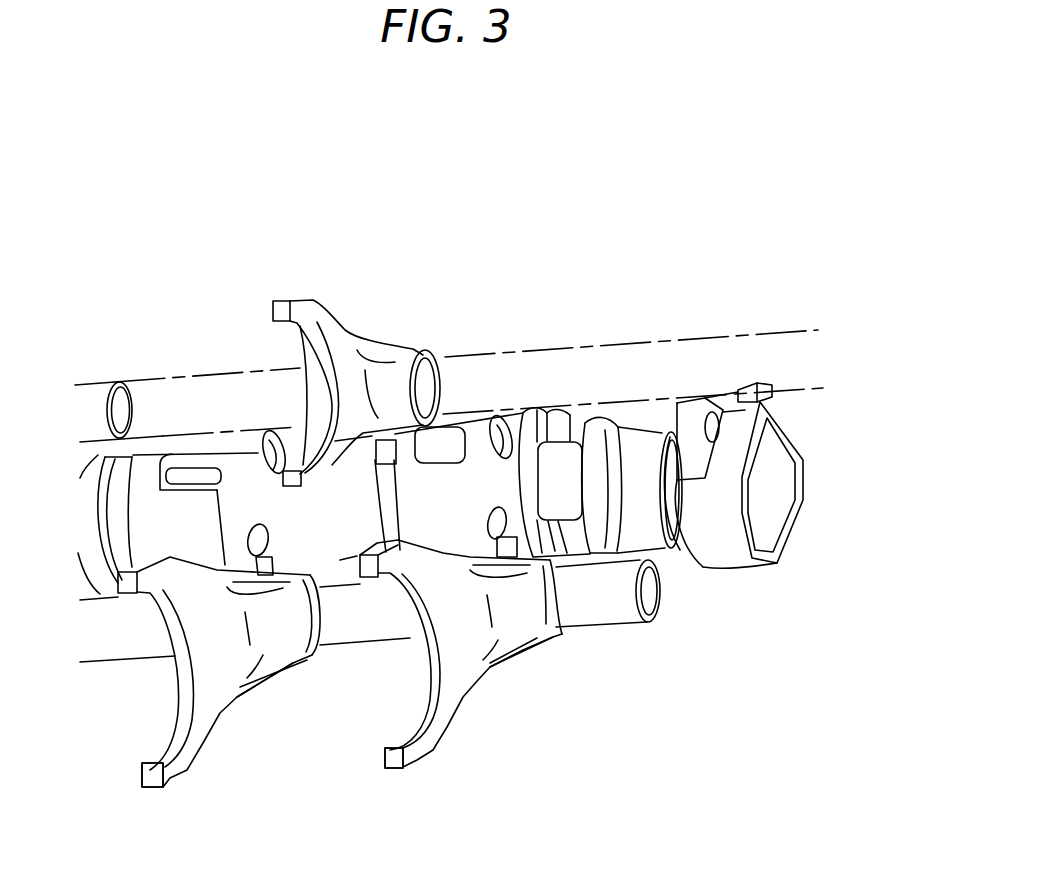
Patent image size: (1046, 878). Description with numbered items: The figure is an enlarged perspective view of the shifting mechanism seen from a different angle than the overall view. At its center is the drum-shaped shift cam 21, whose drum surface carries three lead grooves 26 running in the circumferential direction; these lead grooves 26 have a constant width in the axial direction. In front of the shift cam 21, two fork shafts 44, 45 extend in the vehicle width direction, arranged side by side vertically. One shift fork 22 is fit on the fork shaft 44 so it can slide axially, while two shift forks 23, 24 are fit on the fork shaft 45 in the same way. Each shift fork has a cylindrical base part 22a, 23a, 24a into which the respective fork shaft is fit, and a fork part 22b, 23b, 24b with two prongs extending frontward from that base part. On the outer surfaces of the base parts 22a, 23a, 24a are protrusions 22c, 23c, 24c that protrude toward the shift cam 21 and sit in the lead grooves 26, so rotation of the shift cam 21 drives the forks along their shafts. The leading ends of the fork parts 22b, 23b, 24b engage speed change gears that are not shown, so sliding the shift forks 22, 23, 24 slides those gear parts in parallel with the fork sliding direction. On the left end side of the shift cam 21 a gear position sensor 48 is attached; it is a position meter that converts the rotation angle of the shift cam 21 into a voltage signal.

The shift cam 21 is at (570, 413).
The shift fork 22 is at (346, 373).
The base part 22a is at (395, 350).
The fork part 22b is at (279, 301).
The protrusion 22c is at (367, 468).
The shift fork 23 is at (228, 683).
The base part 23a is at (283, 680).
The fork part 23b is at (175, 787).
The protrusion 23c is at (272, 562).
The shift fork 24 is at (468, 665).
The base part 24a is at (523, 660).
The fork part 24b is at (418, 768).
The protrusion 24c is at (497, 547).
The lead groove 26 is at (277, 447).
The fork shaft 44 is at (95, 398).
The fork shaft 45 is at (618, 628).
The gear position sensor 48 is at (742, 567).